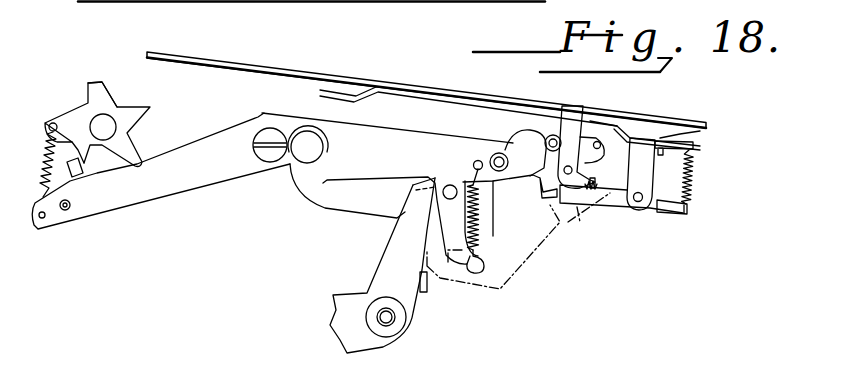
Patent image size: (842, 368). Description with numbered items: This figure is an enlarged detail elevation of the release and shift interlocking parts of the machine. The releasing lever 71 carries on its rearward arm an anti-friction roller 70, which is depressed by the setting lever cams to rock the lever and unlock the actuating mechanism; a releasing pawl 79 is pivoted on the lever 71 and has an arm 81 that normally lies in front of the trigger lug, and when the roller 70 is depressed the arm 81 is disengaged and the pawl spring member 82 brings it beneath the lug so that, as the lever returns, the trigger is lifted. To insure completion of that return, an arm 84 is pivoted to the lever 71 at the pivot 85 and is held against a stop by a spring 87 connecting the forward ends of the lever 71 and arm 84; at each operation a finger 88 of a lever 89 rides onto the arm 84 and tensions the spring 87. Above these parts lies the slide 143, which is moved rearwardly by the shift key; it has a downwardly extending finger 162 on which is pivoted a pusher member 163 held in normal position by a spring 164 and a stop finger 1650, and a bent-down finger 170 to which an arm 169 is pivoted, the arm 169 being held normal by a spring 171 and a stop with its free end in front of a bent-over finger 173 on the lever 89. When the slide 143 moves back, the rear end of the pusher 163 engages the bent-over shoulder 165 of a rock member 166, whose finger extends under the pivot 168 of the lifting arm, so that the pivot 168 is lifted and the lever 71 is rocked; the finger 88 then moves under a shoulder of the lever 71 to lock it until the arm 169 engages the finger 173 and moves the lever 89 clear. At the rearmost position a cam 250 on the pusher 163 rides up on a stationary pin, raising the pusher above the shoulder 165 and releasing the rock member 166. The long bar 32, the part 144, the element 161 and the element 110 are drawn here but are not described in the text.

The bar 32 is at (300, 68).
The slide 143 is at (413, 90).
The cam 250 is at (642, 116).
The stop finger 1650 is at (700, 131).
The pin 144 is at (697, 148).
The spring 164 is at (698, 185).
The finger 162 is at (642, 210).
The pusher member 163 is at (614, 205).
The arm 169 is at (540, 256).
The spring 87 is at (480, 238).
The bent-over finger or shoulder 165 is at (551, 194).
The hook 161 is at (513, 170).
The pivot 168 is at (499, 152).
The rock member 166 is at (546, 115).
The bent down finger 170 is at (570, 122).
The spring 171 is at (597, 188).
The roller 110 is at (444, 184).
The finger 88 is at (420, 173).
The releasing lever 71 is at (387, 137).
The pivot 85 is at (303, 140).
The arm 84 is at (378, 214).
The lever 89 is at (397, 252).
The bent over finger 173 is at (427, 290).
The releasing pawl 79 is at (77, 117).
The arm 81 is at (100, 92).
The pawl spring member 82 is at (80, 162).
The anti-friction roller 70 is at (62, 222).